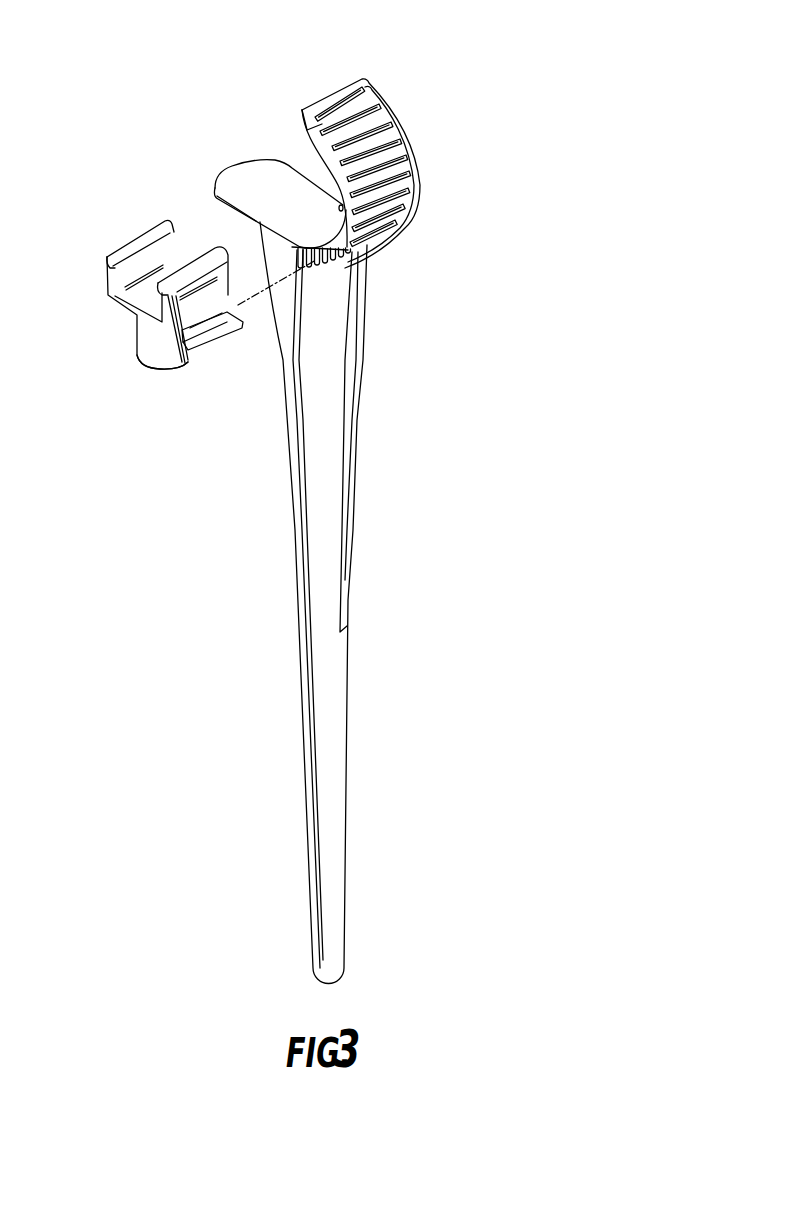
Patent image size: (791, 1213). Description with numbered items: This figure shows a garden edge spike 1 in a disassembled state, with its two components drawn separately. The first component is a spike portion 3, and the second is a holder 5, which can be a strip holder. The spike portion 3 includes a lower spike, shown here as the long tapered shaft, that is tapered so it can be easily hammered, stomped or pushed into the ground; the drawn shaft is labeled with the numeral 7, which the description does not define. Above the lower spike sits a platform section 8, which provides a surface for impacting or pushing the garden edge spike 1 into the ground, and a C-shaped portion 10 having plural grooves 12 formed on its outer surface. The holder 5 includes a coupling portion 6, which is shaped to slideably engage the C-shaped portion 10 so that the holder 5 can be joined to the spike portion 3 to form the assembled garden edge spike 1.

The garden edge spike 1 is at (46, 102).
The spike portion 3 is at (472, 190).
The holder 5 is at (150, 378).
The coupling portion 6 is at (190, 363).
The shaft 7 is at (338, 651).
The platform section 8 is at (251, 191).
The C-shaped portion 10 is at (335, 172).
The grooves 12 is at (370, 98).